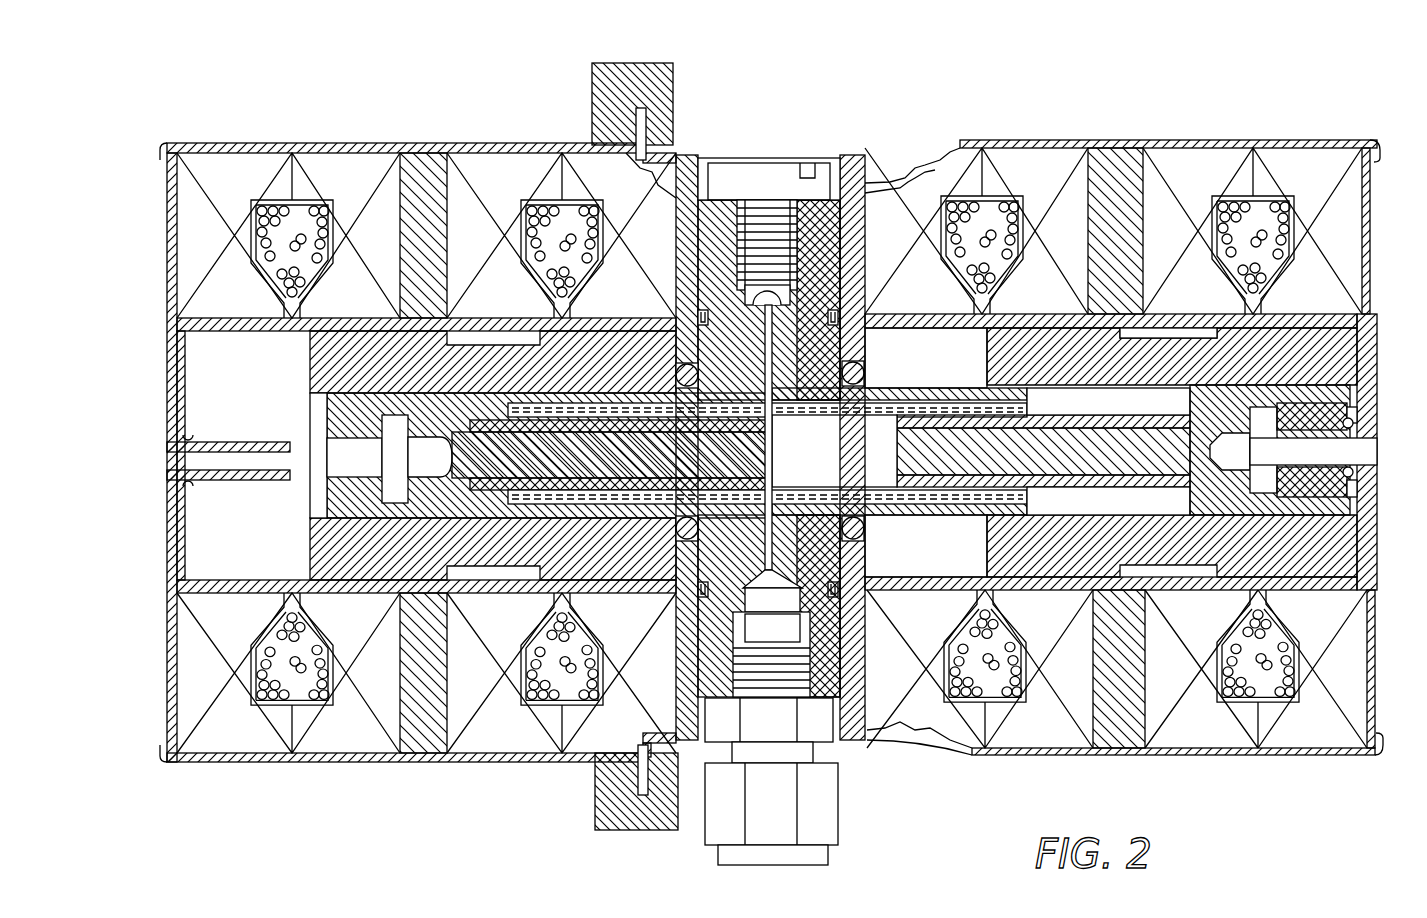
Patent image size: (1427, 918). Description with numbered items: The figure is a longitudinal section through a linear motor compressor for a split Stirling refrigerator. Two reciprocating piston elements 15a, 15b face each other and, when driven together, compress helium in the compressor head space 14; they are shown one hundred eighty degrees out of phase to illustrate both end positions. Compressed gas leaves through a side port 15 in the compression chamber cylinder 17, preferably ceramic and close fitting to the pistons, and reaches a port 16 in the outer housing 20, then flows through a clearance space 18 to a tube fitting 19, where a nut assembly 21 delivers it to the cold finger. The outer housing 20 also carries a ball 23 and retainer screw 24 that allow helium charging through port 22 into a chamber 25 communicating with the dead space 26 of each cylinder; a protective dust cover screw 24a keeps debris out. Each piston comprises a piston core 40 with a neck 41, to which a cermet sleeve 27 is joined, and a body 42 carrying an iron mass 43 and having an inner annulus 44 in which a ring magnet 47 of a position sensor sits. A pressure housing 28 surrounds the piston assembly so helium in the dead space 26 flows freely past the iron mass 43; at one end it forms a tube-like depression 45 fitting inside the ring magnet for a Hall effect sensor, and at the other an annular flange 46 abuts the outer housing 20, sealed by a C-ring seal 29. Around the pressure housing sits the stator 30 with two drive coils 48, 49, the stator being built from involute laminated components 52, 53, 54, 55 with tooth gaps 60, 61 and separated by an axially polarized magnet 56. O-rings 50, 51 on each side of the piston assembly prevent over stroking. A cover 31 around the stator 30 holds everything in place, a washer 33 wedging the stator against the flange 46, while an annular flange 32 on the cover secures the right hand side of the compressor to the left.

The compressor head space 14 is at (855, 448).
The side port 15 is at (790, 487).
The piston element 15a is at (315, 355).
The piston element 15b is at (1306, 340).
The port 16 is at (780, 563).
The compression chamber cylinder 17 is at (913, 493).
The clearance space 18 is at (770, 585).
The tube fitting 19 is at (805, 640).
The outer housing 20 is at (708, 665).
The nut assembly 21 is at (715, 822).
The port 22 is at (750, 322).
The ball 23 is at (792, 306).
The retainer screw 24 is at (760, 265).
The protective dust cover screw 24a is at (762, 163).
The chamber 25 is at (858, 341).
The dead space 26 is at (272, 415).
The cermet sleeve 27 is at (935, 451).
The pressure housing 28 is at (1230, 314).
The C-ring seal 29 is at (845, 308).
The stator 30 is at (1062, 160).
The cover 31 is at (1233, 750).
The annular flange 32 is at (670, 95).
The washer 33 is at (1370, 222).
The piston core 40 is at (1185, 575).
The neck 41 is at (1175, 495).
The body 42 is at (1195, 397).
The iron mass 43 is at (1073, 333).
The inner annulus 44 is at (1333, 517).
The tube-like depression 45 is at (1350, 452).
The annular flange 46 is at (850, 158).
The ring magnet 47 is at (1335, 487).
The drive coil 48 is at (995, 208).
The drive coil 49 is at (1277, 200).
The O-ring 50 is at (866, 374).
The O-ring 51 is at (1352, 422).
The stator body component 52 is at (967, 730).
The stator body component 53 is at (1060, 733).
The stator body component 54 is at (1198, 730).
The stator body component 55 is at (1325, 733).
The magnet 56 is at (1123, 732).
The tooth gap 60 is at (993, 600).
The tooth gap 61 is at (1262, 598).